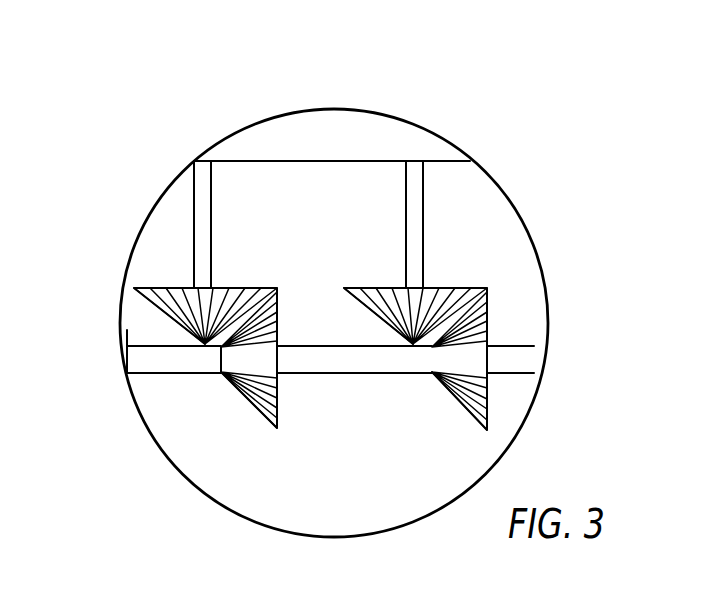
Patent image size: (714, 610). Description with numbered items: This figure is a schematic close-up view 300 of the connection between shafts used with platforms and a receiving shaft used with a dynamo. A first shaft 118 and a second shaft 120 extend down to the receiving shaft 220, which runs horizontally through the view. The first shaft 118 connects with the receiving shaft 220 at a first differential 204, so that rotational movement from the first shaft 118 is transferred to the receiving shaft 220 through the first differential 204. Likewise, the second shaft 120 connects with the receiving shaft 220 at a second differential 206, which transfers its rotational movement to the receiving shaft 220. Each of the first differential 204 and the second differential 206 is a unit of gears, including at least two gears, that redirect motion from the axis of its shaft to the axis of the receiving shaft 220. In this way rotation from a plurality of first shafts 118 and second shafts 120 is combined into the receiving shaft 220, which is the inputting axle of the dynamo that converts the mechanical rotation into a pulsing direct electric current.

The mixing assembly detail 300 is at (232, 116).
The first shaft 118 is at (199, 168).
The second shaft 120 is at (417, 168).
The receiving shaft 220 is at (152, 362).
The first differential 204 is at (248, 406).
The second differential 206 is at (411, 327).